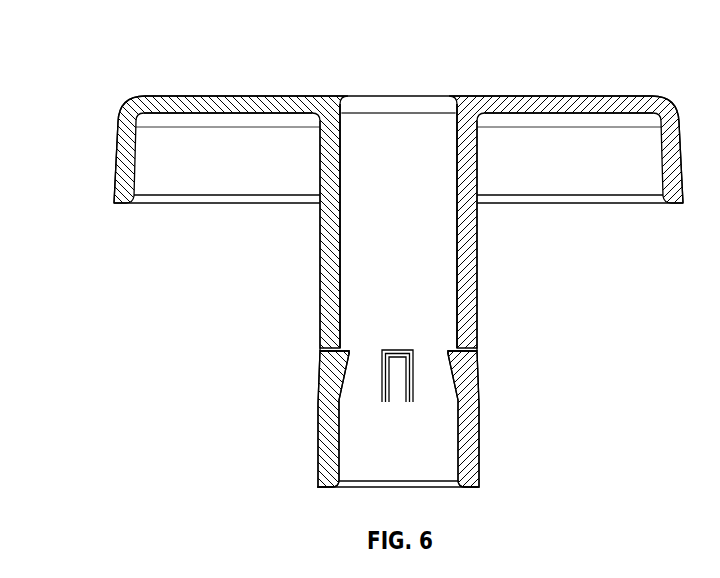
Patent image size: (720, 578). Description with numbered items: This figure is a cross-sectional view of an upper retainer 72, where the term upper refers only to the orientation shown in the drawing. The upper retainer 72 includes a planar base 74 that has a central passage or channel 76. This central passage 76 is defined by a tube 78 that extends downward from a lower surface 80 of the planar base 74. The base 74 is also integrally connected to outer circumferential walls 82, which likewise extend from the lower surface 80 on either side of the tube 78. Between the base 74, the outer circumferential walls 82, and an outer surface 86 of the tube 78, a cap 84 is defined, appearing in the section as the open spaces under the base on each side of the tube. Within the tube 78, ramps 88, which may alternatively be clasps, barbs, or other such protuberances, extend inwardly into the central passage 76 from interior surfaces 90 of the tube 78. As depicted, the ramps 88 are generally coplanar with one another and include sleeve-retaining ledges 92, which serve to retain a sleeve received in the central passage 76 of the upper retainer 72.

The upper retainer 72 is at (84, 46).
The planar base 74 is at (162, 95).
The central passage 76 is at (399, 129).
The tube 78 is at (320, 245).
The lower surface 80 is at (243, 117).
The outer circumferential walls 82 is at (117, 166).
The cap 84 is at (114, 199).
The outer surface 86 is at (320, 341).
The ramps 88 is at (394, 350).
The interior surfaces 90 is at (340, 238).
The sleeve-retaining ledges 92 is at (348, 352).